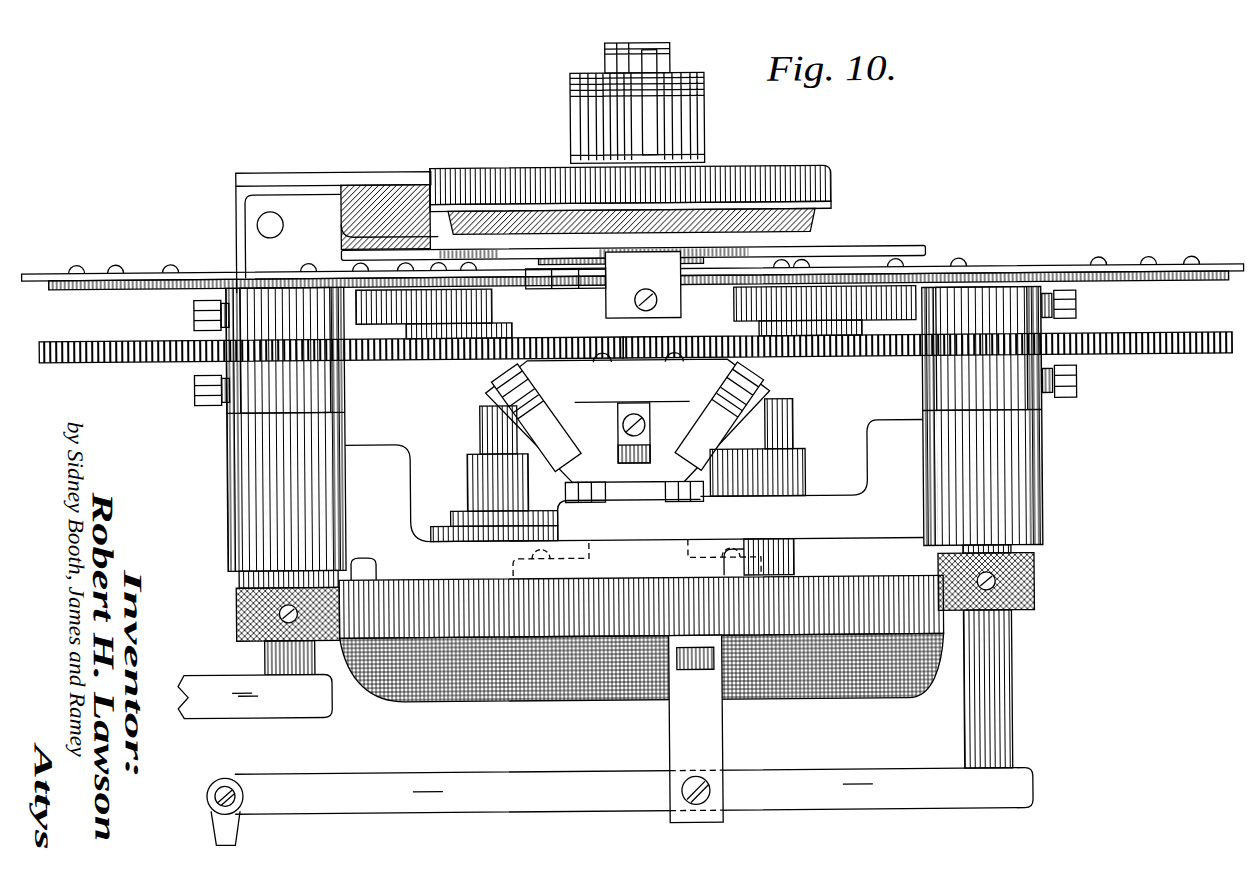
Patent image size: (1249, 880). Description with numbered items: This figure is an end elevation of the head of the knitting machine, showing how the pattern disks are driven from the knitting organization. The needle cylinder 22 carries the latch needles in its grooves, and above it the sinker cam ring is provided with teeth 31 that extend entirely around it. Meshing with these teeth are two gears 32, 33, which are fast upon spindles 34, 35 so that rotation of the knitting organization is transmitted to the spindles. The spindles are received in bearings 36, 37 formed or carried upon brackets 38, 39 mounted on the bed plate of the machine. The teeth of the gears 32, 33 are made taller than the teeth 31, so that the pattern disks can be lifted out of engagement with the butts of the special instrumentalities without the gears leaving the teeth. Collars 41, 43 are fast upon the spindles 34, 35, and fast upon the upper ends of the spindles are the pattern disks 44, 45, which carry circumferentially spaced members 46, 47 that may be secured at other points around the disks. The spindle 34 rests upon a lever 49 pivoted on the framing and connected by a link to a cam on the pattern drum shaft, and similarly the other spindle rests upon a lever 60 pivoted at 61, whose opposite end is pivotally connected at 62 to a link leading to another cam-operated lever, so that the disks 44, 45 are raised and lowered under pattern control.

The needle cylinder 22 is at (776, 387).
The teeth 31 is at (603, 342).
The gear 32 is at (133, 358).
The gear 33 is at (1146, 348).
The spindle 34 is at (266, 656).
The spindle 35 is at (1011, 643).
The bearing 36 is at (228, 497).
The bearing 37 is at (1034, 480).
The bracket 38 is at (380, 446).
The bracket 39 is at (879, 459).
The collar 41 is at (336, 388).
The collar 43 is at (940, 380).
The pattern disk 44 is at (140, 284).
The pattern disk 45 is at (1130, 277).
The member 46 is at (52, 273).
The member 47 is at (1232, 271).
The lever 49 is at (272, 704).
The lever 60 is at (888, 777).
The pivot 61 is at (678, 793).
The pivotal connection 62 is at (206, 793).